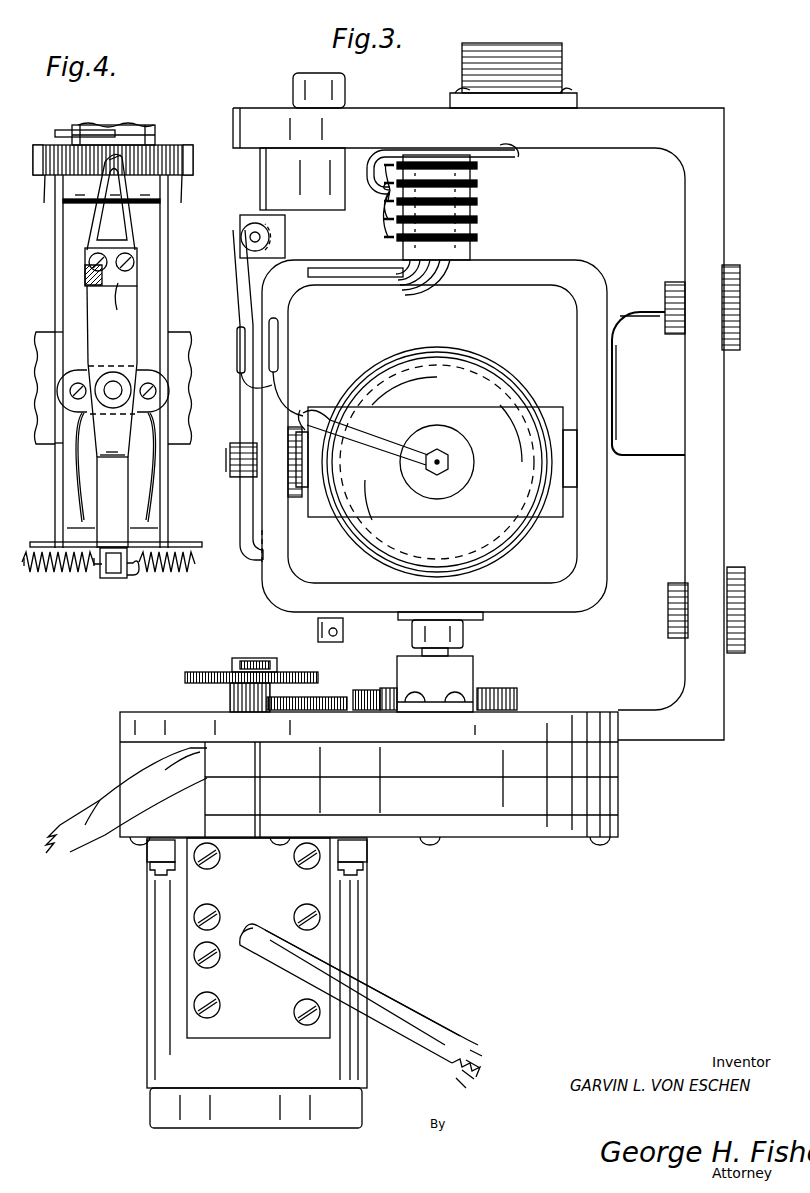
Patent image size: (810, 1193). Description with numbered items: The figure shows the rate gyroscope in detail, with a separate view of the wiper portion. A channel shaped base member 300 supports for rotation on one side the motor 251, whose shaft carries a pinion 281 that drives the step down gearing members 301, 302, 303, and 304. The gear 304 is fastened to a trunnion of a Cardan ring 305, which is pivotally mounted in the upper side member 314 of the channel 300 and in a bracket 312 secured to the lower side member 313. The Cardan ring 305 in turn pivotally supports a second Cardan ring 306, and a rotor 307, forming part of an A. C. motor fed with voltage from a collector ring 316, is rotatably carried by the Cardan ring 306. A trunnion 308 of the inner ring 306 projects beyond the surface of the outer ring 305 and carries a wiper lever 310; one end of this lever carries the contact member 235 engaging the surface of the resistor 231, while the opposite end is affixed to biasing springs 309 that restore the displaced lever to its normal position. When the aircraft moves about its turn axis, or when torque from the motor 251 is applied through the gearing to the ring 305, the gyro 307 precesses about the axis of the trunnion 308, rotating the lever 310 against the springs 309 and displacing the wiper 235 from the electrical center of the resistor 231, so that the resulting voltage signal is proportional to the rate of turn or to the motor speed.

In FIG. 4, the resistor 231 is at (163, 147).
In FIG. 3, the resistor 231 is at (250, 226).
In FIG. 4, the contact member 235 is at (90, 236).
In FIG. 3, the contact member 235 is at (240, 290).
In FIG. 3, the motor 251 is at (160, 916).
In FIG. 3, the pinion 281 is at (235, 663).
In FIG. 3, the channel shaped base member 300 is at (705, 186).
In FIG. 3, the step down gearing member 301 is at (185, 675).
In FIG. 3, the step down gearing member 302 is at (230, 703).
In FIG. 3, the step down gearing member 303 is at (320, 697).
In FIG. 3, the gear 304 is at (449, 680).
In FIG. 4, the Cardan ring 305 is at (152, 232).
In FIG. 3, the Cardan ring 305 is at (590, 276).
In FIG. 4, the second Cardan ring 306 is at (182, 332).
In FIG. 3, the second Cardan ring 306 is at (358, 415).
In FIG. 3, the rotor 307 is at (392, 372).
In FIG. 4, the trunnion 308 is at (116, 386).
In FIG. 3, the trunnion 308 is at (232, 458).
In FIG. 4, the biasing springs 309 is at (52, 577).
In FIG. 4, the wiper lever 310 is at (98, 310).
In FIG. 3, the wiper lever 310 is at (245, 402).
In FIG. 3, the bracket 312 is at (410, 672).
In FIG. 3, the lower side member 313 is at (628, 724).
In FIG. 3, the upper side member 314 is at (402, 128).
In FIG. 4, the collector ring 316 is at (133, 130).
In FIG. 3, the collector ring 316 is at (470, 198).